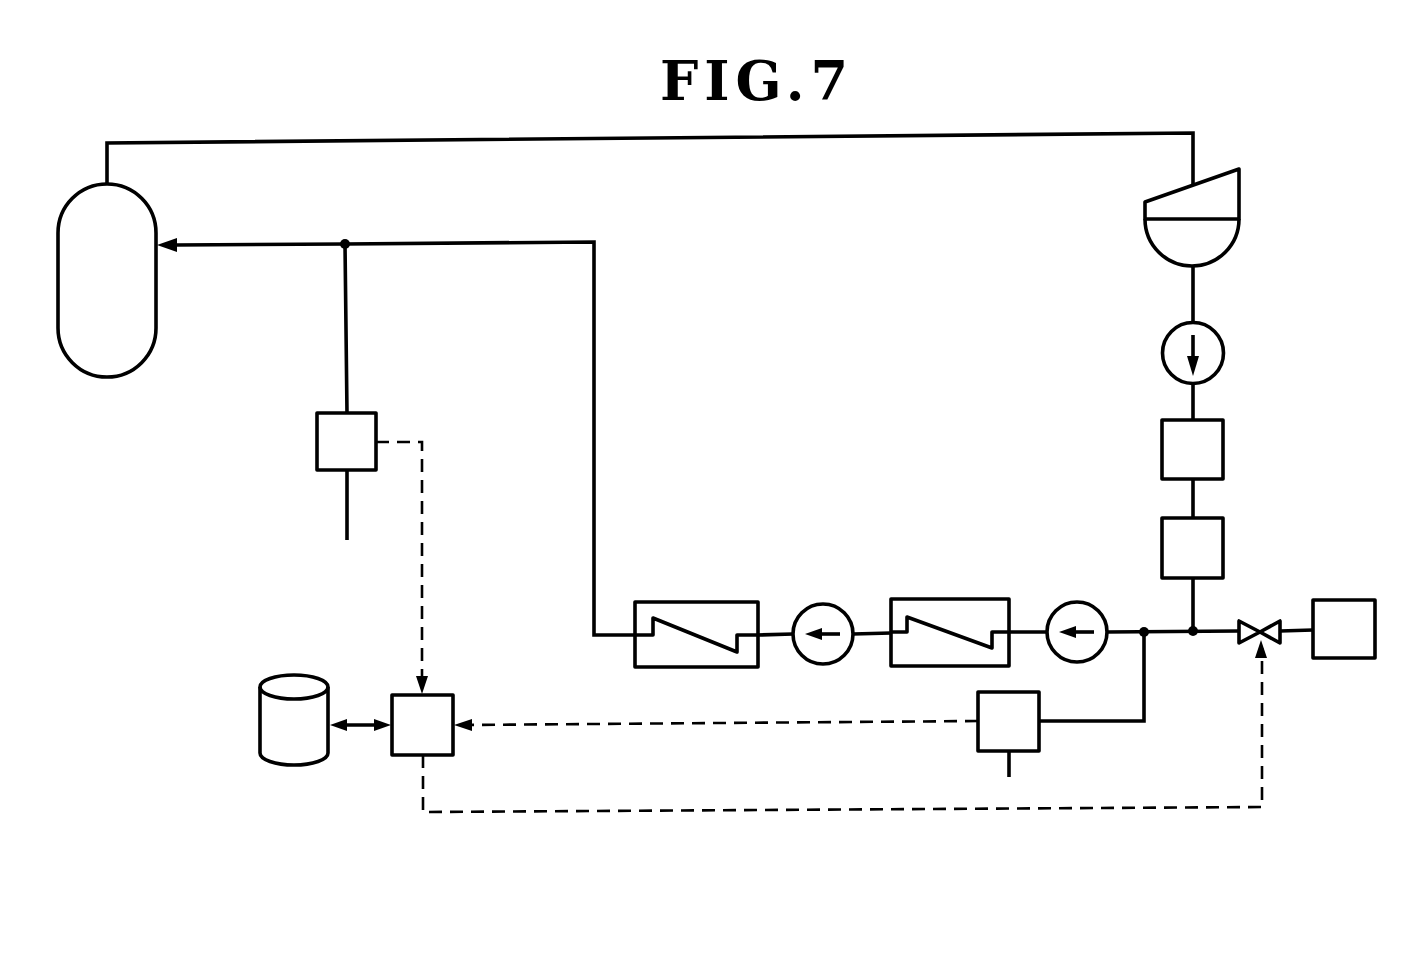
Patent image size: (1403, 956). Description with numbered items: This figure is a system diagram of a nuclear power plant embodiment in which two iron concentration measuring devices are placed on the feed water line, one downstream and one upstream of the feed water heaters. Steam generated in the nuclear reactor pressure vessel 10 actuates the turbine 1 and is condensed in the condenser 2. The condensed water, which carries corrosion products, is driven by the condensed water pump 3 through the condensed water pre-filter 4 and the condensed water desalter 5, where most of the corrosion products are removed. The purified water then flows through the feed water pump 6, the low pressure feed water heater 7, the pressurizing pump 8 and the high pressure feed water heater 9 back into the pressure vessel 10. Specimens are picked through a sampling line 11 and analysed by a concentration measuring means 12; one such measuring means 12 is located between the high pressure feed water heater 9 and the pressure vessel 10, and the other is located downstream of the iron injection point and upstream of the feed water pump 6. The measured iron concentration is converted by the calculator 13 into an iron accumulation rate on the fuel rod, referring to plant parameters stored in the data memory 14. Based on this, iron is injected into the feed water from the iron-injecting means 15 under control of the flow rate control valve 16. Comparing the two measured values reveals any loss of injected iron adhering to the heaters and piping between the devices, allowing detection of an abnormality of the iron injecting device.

The turbine 1 is at (1280, 199).
The condenser 2 is at (1262, 265).
The condensed water pump 3 is at (1248, 364).
The condensed water pre-filter 4 is at (1248, 464).
The condensed water desalter 5 is at (1248, 564).
The feed water pump 6 is at (1092, 578).
The low pressure feed water heater 7 is at (990, 568).
The pressurizing pump 8 is at (838, 580).
The high pressure feed water heater 9 is at (735, 570).
The nuclear reactor pressure vessel 10 is at (190, 318).
The sampling line 11 is at (382, 338).
The concentration measuring means 12 is at (317, 448).
The calculator 13 is at (468, 668).
The data memory 14 is at (290, 675).
The iron-injecting means 15 is at (1360, 570).
The flow rate control valve 16 is at (1284, 682).